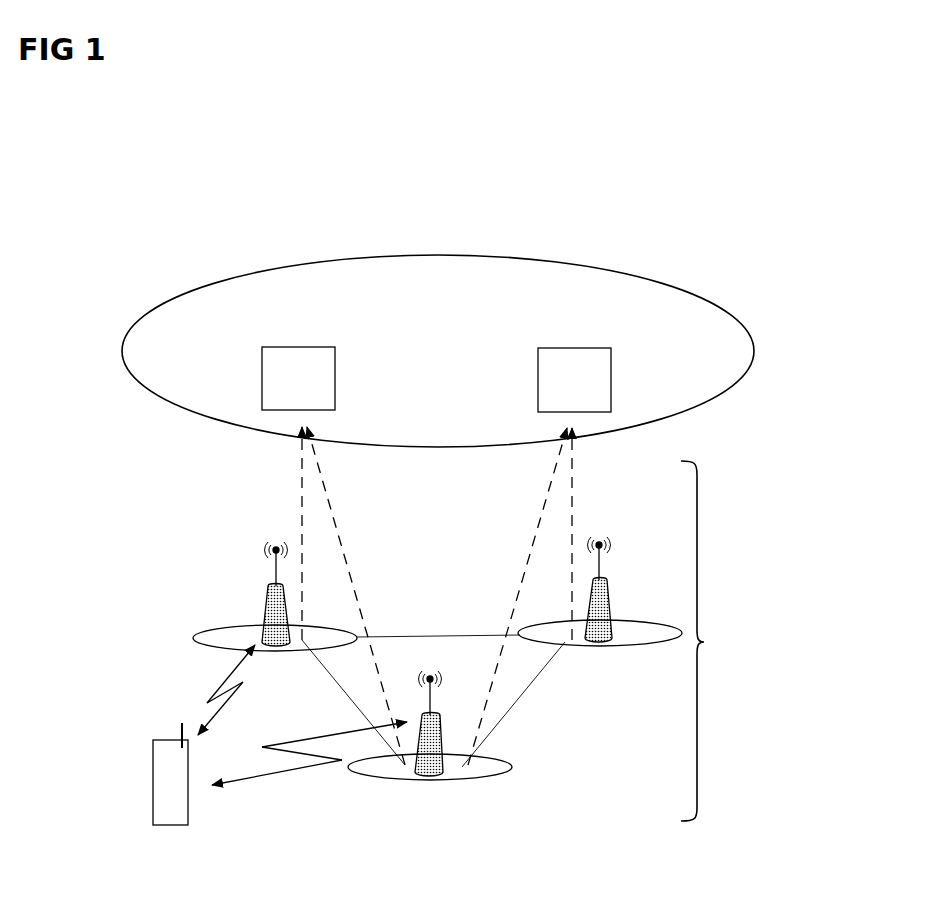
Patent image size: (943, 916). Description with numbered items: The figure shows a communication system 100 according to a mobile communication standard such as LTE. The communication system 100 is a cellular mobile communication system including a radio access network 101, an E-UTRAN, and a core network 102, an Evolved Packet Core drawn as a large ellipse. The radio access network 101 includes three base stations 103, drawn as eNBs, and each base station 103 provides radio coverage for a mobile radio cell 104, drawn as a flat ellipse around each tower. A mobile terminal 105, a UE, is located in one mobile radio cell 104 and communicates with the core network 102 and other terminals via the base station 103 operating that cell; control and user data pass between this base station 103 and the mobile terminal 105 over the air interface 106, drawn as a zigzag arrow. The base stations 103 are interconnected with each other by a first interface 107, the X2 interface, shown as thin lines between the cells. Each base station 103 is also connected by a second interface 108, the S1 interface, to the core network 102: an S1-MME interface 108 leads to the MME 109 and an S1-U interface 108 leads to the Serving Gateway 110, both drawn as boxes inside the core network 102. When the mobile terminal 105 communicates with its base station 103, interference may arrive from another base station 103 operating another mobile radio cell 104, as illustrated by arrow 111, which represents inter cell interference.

The communication system 100 is at (730, 188).
The radio access network 101 is at (790, 618).
The core network 102 is at (744, 320).
The base station 103 is at (267, 588).
The mobile radio cell 104 is at (207, 640).
The mobile terminal 105 is at (172, 826).
The air interface 106 is at (240, 700).
The first interface 107 is at (430, 622).
The second interface 108 is at (300, 478).
The MME 109 is at (298, 347).
The Serving Gateway 110 is at (576, 348).
The arrow 111 is at (272, 778).